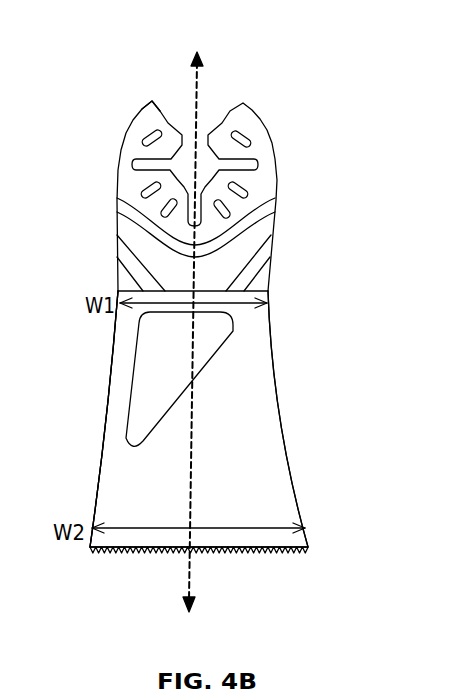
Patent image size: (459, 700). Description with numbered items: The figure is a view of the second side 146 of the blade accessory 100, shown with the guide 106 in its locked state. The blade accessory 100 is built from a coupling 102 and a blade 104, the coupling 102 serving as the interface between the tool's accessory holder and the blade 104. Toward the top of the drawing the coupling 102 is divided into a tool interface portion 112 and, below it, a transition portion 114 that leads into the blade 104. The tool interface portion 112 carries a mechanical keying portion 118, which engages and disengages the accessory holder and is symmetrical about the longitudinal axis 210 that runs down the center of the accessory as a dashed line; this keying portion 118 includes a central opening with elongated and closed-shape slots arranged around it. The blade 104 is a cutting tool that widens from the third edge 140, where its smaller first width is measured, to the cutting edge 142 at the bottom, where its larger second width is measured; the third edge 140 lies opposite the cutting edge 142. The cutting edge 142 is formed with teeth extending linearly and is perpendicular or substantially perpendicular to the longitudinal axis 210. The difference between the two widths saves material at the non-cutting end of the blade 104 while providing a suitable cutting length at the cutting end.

The blade accessory 100 is at (352, 64).
The coupling 102 is at (266, 200).
The blade 104 is at (213, 444).
The guide 106 is at (135, 376).
The tool interface portion 112 is at (287, 107).
The transition portion 114 is at (230, 246).
The mechanical keying portion 118 is at (213, 103).
The third edge 140 is at (268, 302).
The cutting edge 142 is at (148, 555).
The second side 146 is at (135, 498).
The longitudinal axis 210 is at (193, 573).